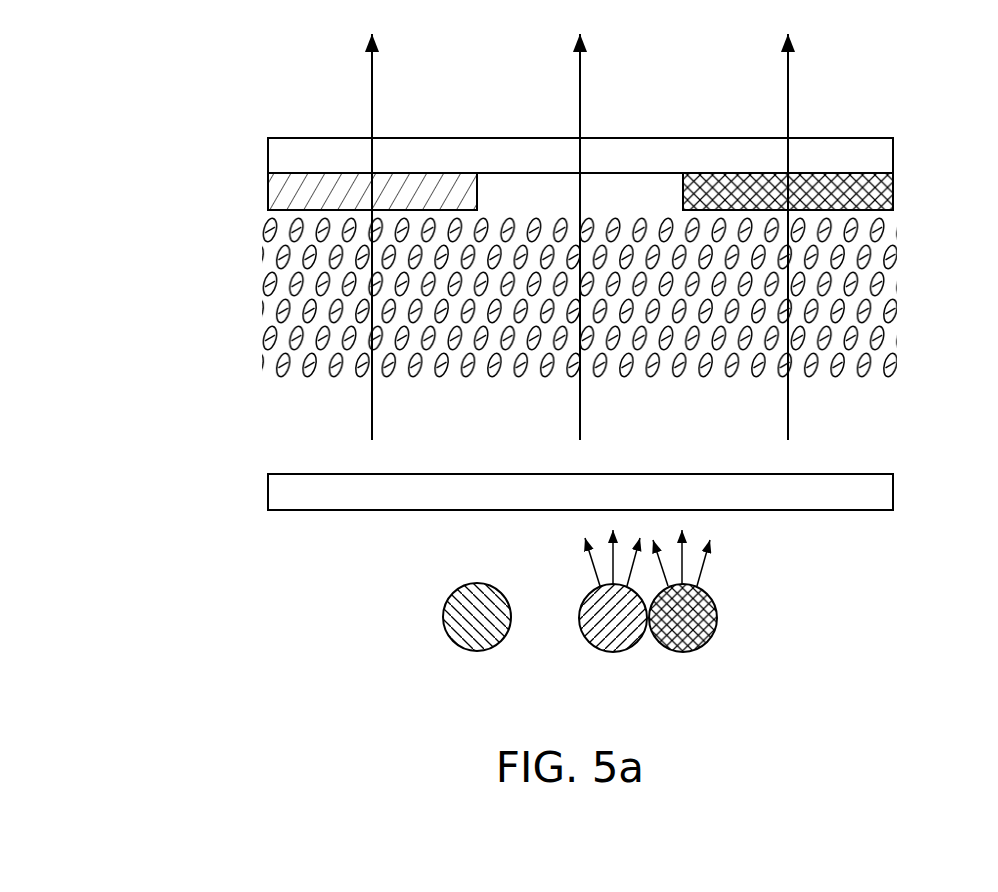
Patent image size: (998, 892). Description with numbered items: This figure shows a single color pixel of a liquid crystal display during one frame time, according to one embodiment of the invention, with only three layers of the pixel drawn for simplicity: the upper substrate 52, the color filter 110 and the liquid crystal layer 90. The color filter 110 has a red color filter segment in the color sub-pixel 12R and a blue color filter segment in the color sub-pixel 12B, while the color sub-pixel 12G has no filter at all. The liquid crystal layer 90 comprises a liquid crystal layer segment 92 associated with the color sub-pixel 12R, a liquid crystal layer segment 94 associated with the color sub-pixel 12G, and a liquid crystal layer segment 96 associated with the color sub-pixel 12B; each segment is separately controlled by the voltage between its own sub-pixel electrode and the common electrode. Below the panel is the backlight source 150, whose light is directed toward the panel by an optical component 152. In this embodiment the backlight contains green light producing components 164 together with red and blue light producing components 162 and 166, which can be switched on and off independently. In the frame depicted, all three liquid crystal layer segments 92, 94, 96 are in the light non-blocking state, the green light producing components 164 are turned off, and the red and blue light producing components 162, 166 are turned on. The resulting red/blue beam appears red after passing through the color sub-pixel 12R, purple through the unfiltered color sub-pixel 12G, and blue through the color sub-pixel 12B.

The upper substrate 52 is at (332, 140).
The color filter 110 is at (262, 193).
The liquid crystal layer 90 is at (515, 325).
The liquid crystal layer segment 92 is at (343, 406).
The liquid crystal layer segment 94 is at (569, 406).
The liquid crystal layer segment 96 is at (776, 406).
The color sub-pixel 12R is at (393, 106).
The color sub-pixel 12G is at (611, 106).
The color sub-pixel 12B is at (808, 104).
The backlight source 150 is at (611, 579).
The optical component 152 is at (338, 510).
The red light producing component 162 is at (613, 607).
The green light producing component 164 is at (477, 634).
The blue light producing component 166 is at (683, 607).